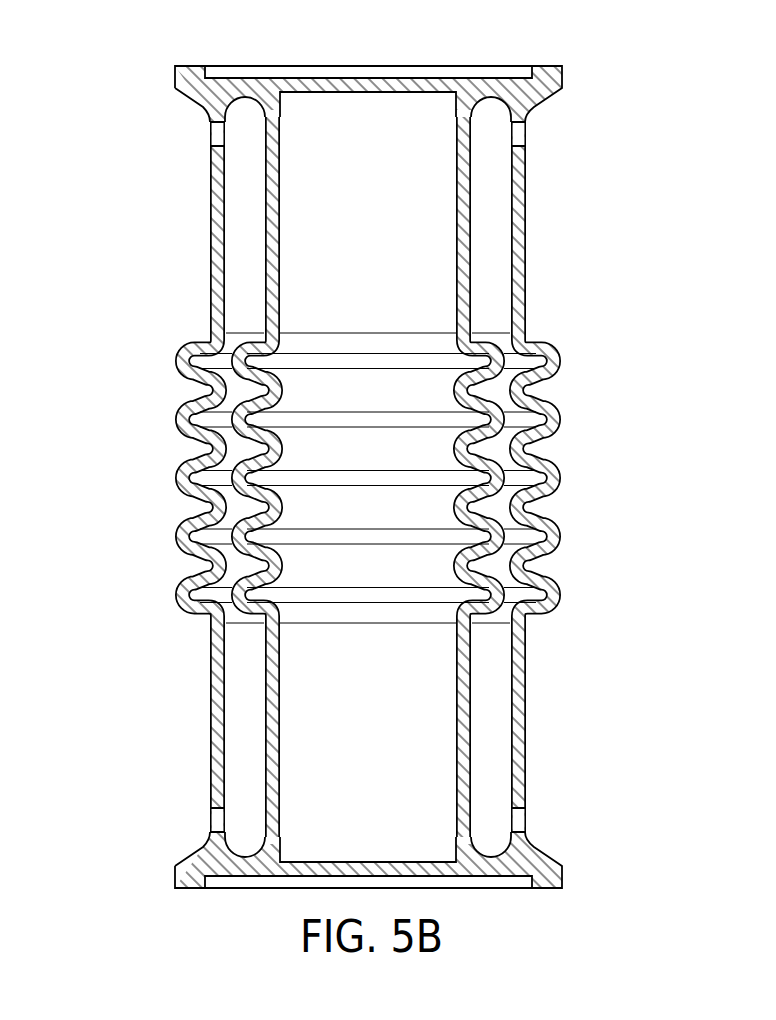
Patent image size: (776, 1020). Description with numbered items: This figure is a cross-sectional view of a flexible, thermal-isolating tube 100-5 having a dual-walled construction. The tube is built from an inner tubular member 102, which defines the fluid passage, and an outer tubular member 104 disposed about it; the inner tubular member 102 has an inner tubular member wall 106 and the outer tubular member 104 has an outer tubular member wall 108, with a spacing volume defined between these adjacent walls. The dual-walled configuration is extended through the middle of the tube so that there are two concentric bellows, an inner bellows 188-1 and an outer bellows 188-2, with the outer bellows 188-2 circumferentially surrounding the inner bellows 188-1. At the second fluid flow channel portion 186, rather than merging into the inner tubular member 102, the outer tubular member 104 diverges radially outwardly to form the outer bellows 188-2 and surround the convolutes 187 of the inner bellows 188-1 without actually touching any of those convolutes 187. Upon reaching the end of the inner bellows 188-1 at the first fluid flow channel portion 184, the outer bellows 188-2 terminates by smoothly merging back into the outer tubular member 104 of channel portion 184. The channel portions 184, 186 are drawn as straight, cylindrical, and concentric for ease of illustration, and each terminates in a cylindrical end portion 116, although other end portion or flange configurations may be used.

The flexible, thermal-isolating tube 100-5 is at (396, 469).
The inner tubular member 102 is at (368, 477).
The outer tubular member 104 is at (378, 477).
The inner tubular member wall 106 is at (456, 260).
The outer tubular member wall 108 is at (516, 284).
The cylindrical end portion 116 is at (556, 71).
The first fluid flow channel portion 184 is at (560, 107).
The second fluid flow channel portion 186 is at (551, 625).
The convolutes 187 is at (177, 420).
The inner bellows 188-1 is at (565, 340).
The outer bellows 188-2 is at (648, 340).